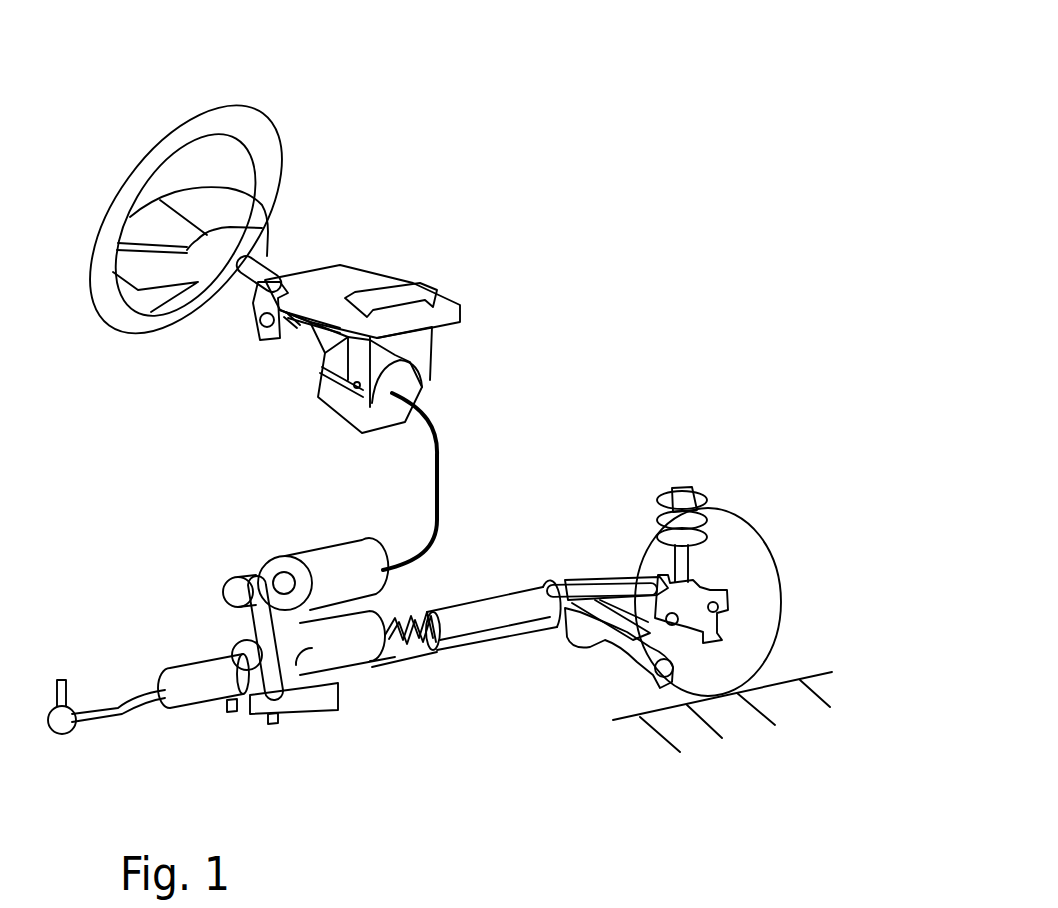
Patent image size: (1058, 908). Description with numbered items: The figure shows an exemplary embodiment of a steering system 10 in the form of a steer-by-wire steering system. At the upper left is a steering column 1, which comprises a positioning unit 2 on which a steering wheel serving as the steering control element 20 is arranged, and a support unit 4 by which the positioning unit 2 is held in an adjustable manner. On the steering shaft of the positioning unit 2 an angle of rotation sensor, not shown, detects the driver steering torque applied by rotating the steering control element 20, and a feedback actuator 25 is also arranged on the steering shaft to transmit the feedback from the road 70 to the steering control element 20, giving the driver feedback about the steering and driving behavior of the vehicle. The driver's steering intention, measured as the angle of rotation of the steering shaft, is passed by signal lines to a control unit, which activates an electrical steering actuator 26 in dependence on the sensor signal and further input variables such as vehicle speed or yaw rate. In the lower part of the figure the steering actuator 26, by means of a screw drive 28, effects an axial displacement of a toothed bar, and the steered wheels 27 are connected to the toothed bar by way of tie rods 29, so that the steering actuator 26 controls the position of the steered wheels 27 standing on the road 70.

The steering system 10 is at (594, 124).
The steering column 1 is at (463, 260).
The positioning unit 2 is at (289, 237).
The support unit 4 is at (363, 273).
The steering control element 20 is at (243, 105).
The feedback actuator 25 is at (279, 401).
The electrical steering actuator 26 is at (303, 536).
The steered wheels 27 is at (763, 540).
The screw drive 28 is at (193, 573).
The tie rods 29 is at (117, 703).
The road 70 is at (755, 690).